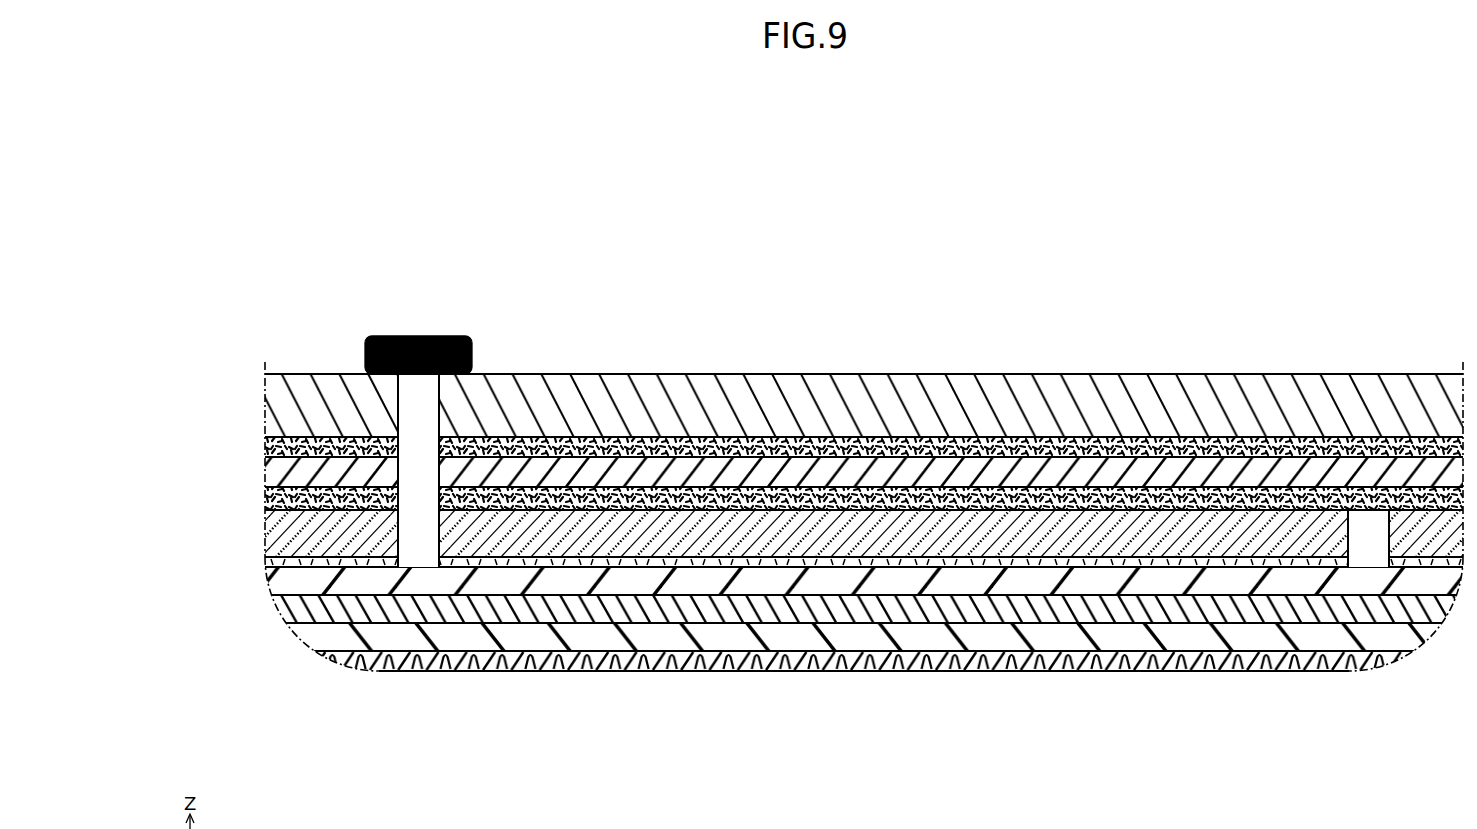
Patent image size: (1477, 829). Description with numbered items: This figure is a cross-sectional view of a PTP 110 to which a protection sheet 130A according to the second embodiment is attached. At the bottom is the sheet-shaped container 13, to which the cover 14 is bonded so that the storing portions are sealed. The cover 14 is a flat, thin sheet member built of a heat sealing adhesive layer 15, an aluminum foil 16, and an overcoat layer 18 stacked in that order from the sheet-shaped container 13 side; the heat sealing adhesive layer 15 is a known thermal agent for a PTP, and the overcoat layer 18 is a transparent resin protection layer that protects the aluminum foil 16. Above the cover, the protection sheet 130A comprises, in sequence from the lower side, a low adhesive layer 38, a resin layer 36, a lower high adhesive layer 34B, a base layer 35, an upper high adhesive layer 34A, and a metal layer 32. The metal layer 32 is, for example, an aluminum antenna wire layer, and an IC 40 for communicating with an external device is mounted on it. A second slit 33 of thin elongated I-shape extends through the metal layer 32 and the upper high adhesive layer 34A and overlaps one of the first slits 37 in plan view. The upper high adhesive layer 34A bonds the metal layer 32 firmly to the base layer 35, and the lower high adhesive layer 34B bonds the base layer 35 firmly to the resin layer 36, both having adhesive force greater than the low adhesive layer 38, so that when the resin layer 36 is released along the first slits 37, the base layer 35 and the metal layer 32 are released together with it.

The PTP 110 is at (897, 155).
The protection sheet 130A is at (183, 311).
The IC 40 is at (373, 358).
The metal layer 32 is at (285, 400).
The second slit 33 is at (398, 416).
The upper high adhesive layer 34A is at (272, 443).
The base layer 35 is at (282, 473).
The lower high adhesive layer 34B is at (282, 500).
The resin layer 36 is at (282, 530).
The first slit 37 is at (1348, 534).
The low adhesive layer 38 is at (280, 560).
The cover 14 is at (192, 620).
The overcoat layer 18 is at (290, 585).
The aluminum foil 16 is at (283, 613).
The heat sealing adhesive layer 15 is at (320, 640).
The sheet-shaped container 13 is at (368, 670).